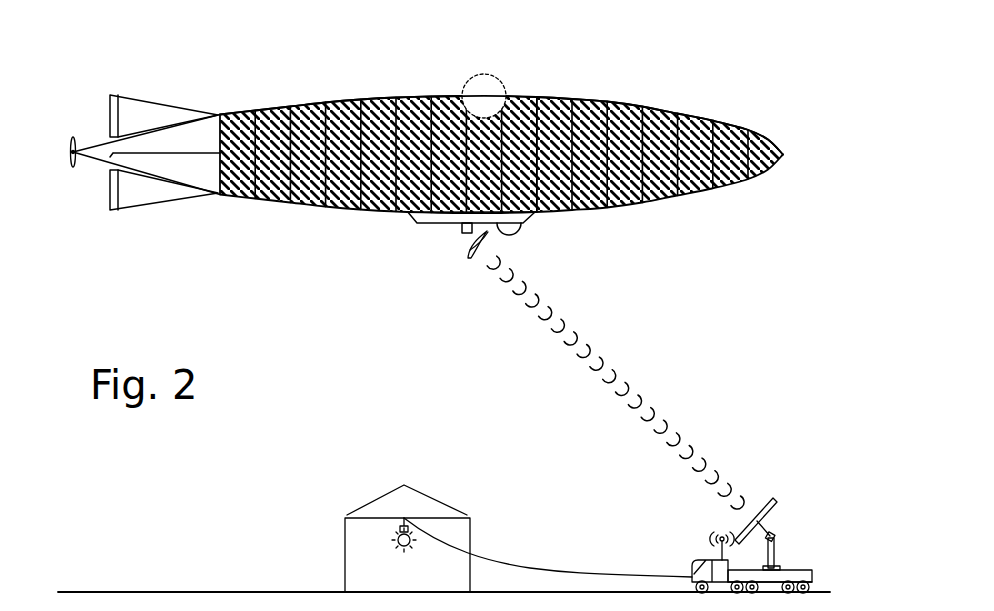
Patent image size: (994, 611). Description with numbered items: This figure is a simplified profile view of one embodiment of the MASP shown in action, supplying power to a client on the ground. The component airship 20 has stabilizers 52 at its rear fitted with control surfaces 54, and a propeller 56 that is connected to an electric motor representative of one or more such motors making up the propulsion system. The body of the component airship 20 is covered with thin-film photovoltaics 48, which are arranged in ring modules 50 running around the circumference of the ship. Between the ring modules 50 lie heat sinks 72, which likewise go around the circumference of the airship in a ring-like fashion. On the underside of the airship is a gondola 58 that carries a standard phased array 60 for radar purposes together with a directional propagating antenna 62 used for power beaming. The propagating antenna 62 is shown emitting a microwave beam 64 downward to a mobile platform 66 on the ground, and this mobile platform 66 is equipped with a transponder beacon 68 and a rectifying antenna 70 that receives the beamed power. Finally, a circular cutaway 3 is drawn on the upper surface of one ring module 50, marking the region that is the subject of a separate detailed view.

The component airship 20 is at (692, 205).
The circular cutaway 3 is at (494, 77).
The thin-film photovoltaics 48 is at (630, 105).
The ring modules 50 is at (343, 126).
The heat sinks 72 is at (538, 107).
The stabilizers 52 is at (142, 192).
The control surfaces 54 is at (110, 115).
The propeller 56 is at (72, 168).
The gondola 58 is at (430, 223).
The phased array 60 is at (513, 228).
The directional propagating antenna 62 is at (470, 256).
The microwave beam 64 is at (630, 382).
The mobile platform 66 is at (688, 563).
The transponder beacon 68 is at (707, 535).
The rectifying antenna 70 is at (762, 522).